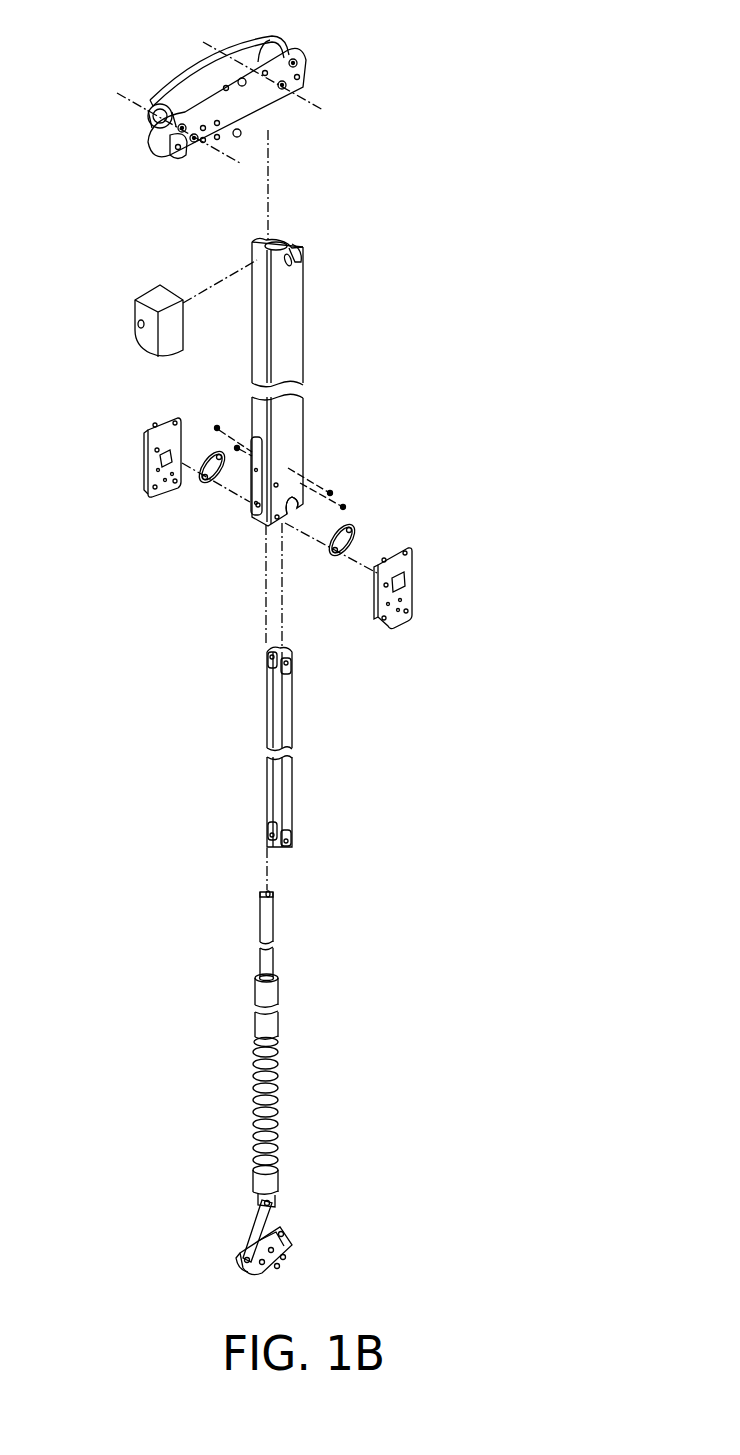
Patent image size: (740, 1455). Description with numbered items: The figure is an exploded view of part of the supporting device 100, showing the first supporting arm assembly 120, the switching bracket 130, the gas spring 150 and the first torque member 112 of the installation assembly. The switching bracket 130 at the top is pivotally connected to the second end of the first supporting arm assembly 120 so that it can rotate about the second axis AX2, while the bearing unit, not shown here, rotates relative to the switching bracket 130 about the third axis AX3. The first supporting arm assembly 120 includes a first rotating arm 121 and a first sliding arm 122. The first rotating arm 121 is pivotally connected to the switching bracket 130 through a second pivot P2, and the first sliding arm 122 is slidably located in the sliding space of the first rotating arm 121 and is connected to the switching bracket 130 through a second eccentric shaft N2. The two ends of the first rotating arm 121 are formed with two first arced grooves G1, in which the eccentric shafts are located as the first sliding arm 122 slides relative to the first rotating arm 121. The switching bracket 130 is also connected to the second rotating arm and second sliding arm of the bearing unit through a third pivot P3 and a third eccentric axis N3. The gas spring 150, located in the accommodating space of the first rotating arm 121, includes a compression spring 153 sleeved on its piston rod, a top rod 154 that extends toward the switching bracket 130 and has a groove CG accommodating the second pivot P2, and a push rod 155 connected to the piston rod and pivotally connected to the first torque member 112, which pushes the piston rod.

The supporting device 100 is at (415, 1303).
The first torque member 112 is at (268, 1275).
The first supporting arm assembly 120 is at (203, 737).
The first rotating arm 121 is at (287, 303).
The first sliding arm 122 is at (286, 783).
The switching bracket 130 is at (220, 100).
The gas spring 150 is at (276, 1075).
The compression spring 153 is at (280, 1082).
The top rod 154 is at (268, 925).
The push rod 155 is at (258, 1236).
The groove CG is at (258, 891).
The first arced groove G1 is at (295, 243).
The second eccentric shaft N2 is at (293, 63).
The third eccentric axis N3 is at (182, 128).
The second pivot P2 is at (282, 85).
The third pivot P3 is at (195, 138).
The second axis AX2 is at (323, 110).
The third axis AX3 is at (122, 97).